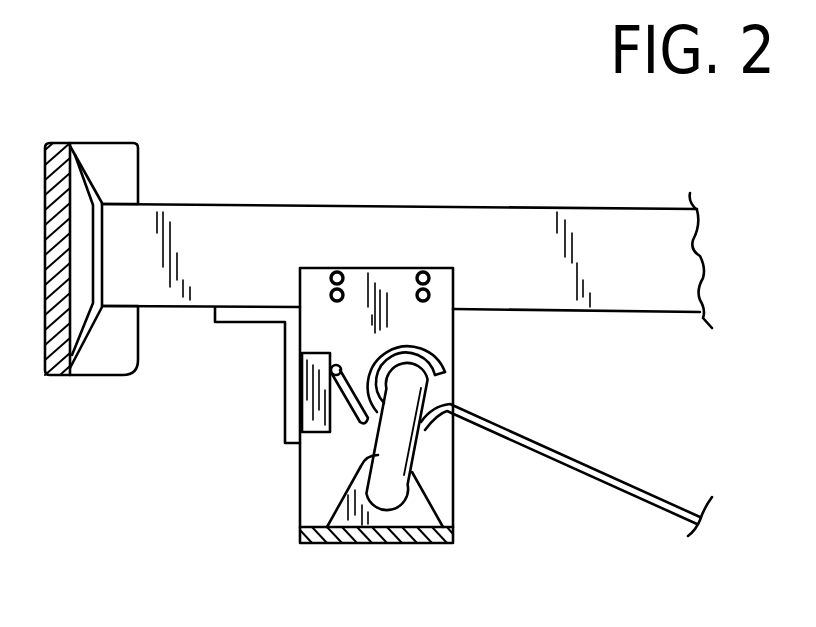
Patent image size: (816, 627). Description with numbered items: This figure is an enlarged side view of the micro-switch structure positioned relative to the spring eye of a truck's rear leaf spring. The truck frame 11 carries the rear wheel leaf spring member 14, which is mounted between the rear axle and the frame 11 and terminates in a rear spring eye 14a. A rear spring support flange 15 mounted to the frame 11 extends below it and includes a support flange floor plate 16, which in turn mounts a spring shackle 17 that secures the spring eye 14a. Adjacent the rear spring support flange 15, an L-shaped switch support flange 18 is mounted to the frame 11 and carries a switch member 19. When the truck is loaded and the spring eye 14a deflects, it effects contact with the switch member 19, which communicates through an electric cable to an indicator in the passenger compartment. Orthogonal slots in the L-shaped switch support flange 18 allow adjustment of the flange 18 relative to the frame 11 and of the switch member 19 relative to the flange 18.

The frame 11 is at (447, 208).
The rear wheel leaf spring member 14 is at (580, 458).
The rear spring eye 14a is at (412, 337).
The rear spring support flange 15 is at (438, 332).
The support flange floor plate 16 is at (312, 523).
The spring shackle 17 is at (397, 448).
The L-shaped switch support flange 18 is at (287, 388).
The switch member 19 is at (333, 352).